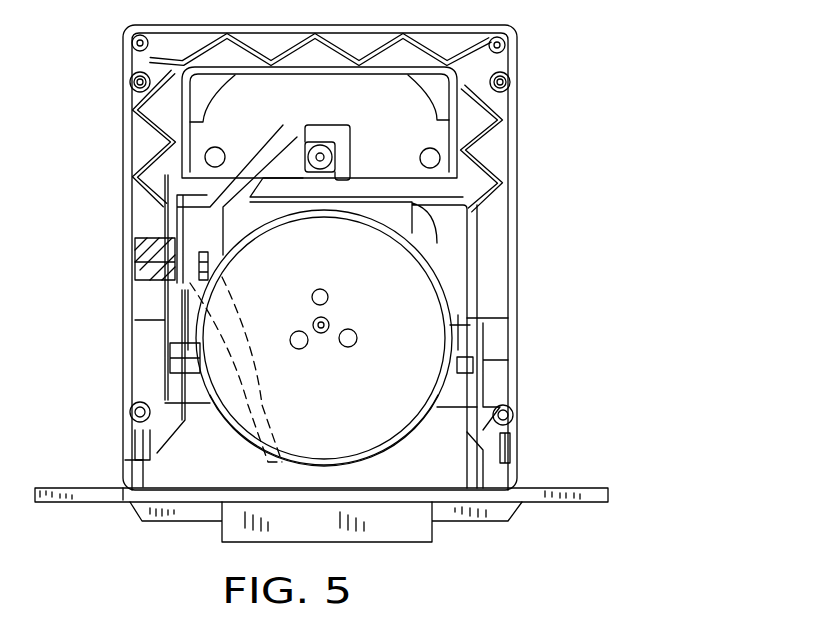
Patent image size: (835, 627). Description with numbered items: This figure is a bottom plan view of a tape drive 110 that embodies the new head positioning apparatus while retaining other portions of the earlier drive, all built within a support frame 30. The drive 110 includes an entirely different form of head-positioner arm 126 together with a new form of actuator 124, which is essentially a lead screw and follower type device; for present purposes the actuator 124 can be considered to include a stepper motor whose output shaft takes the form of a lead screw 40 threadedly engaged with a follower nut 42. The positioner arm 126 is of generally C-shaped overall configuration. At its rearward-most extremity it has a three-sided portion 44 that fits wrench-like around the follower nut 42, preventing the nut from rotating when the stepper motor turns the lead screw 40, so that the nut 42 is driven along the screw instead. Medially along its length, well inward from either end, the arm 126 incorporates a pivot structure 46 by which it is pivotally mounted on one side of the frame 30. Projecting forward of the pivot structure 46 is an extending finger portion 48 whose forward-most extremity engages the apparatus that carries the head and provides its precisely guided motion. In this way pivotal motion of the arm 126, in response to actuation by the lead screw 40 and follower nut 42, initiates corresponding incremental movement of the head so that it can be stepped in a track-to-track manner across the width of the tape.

The support frame 30 is at (120, 113).
The drive 110 is at (558, 136).
The head-positioner arm 126 is at (288, 124).
The actuator 124 is at (298, 152).
The three-sided portion 44 is at (300, 97).
The follower nut 42 is at (318, 180).
The lead screw 40 is at (312, 172).
The pivot structure 46 is at (150, 262).
The finger portion 48 is at (255, 355).